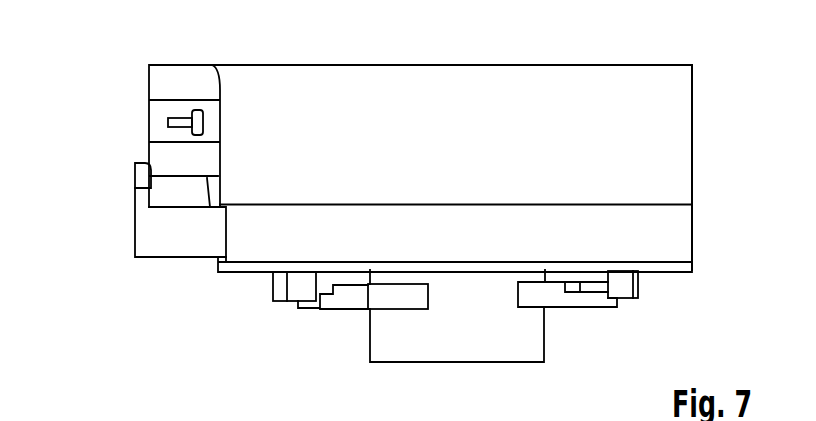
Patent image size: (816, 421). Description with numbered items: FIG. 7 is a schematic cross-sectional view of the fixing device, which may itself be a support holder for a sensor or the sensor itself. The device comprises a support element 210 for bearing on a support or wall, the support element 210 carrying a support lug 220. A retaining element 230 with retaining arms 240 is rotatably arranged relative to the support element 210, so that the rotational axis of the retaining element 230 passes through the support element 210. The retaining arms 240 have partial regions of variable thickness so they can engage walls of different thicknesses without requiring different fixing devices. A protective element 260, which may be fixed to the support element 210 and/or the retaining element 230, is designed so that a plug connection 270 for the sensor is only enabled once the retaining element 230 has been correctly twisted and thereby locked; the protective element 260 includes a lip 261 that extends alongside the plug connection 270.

The support element 210 is at (252, 248).
The support lug 220 is at (295, 288).
The retaining element 230 is at (380, 78).
The retaining arms 240 is at (352, 300).
The protective element 260 is at (182, 240).
The lip 261 is at (140, 187).
The plug connection 270 is at (181, 78).